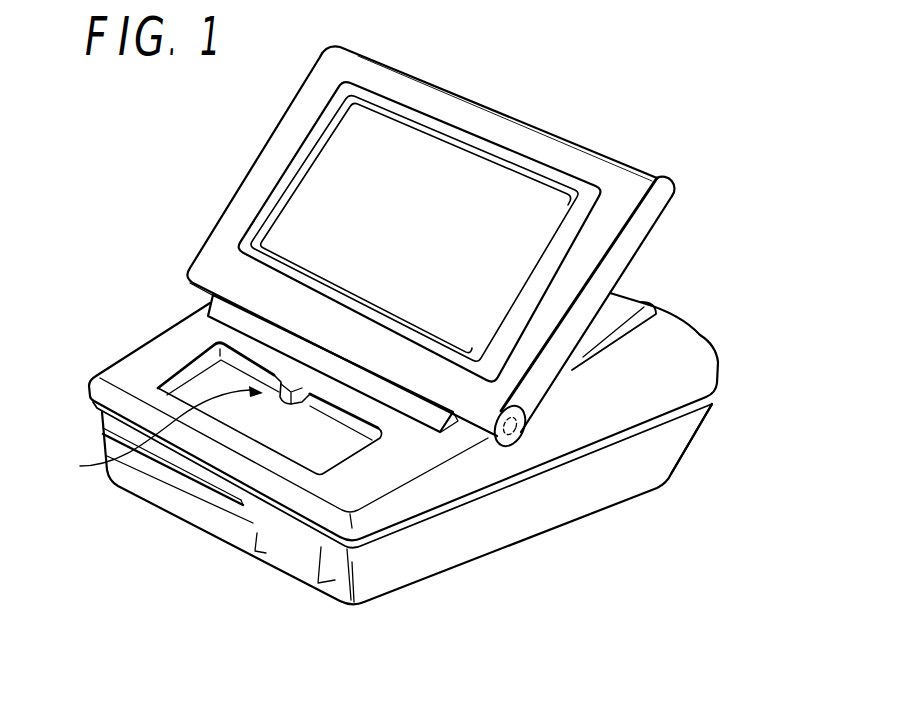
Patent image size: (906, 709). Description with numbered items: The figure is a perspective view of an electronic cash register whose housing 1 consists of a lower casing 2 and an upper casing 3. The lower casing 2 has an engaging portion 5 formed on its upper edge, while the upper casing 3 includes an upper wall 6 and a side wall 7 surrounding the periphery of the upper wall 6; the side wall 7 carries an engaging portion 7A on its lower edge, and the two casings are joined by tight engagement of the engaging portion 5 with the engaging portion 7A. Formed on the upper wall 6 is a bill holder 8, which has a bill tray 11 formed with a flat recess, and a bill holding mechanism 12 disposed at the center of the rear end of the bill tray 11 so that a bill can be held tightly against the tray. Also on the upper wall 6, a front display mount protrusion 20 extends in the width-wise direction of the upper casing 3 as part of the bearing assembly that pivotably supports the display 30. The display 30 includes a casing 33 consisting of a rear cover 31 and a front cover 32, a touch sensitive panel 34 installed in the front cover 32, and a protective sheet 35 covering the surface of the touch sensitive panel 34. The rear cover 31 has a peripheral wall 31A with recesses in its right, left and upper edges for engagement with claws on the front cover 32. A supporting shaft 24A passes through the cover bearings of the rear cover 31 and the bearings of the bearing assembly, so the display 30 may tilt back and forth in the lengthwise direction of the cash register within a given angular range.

The housing 1 is at (434, 447).
The lower casing 2 is at (439, 495).
The upper casing 3 is at (412, 447).
The engaging portion 5 is at (583, 450).
The upper wall 6 is at (163, 336).
The side wall 7 is at (650, 358).
The engaging portion 7A is at (650, 425).
The bill holder 8 is at (314, 463).
The bill tray 11 is at (258, 417).
The bill holding mechanism 12 is at (155, 435).
The front display mount protrusion 20 is at (352, 357).
The supporting shaft 24A is at (513, 420).
The display 30 is at (499, 305).
The rear cover 31 is at (642, 295).
The peripheral wall 31A is at (634, 257).
The front cover 32 is at (656, 181).
The casing 33 is at (658, 270).
The touch sensitive panel 34 is at (391, 222).
The protective sheet 35 is at (343, 190).